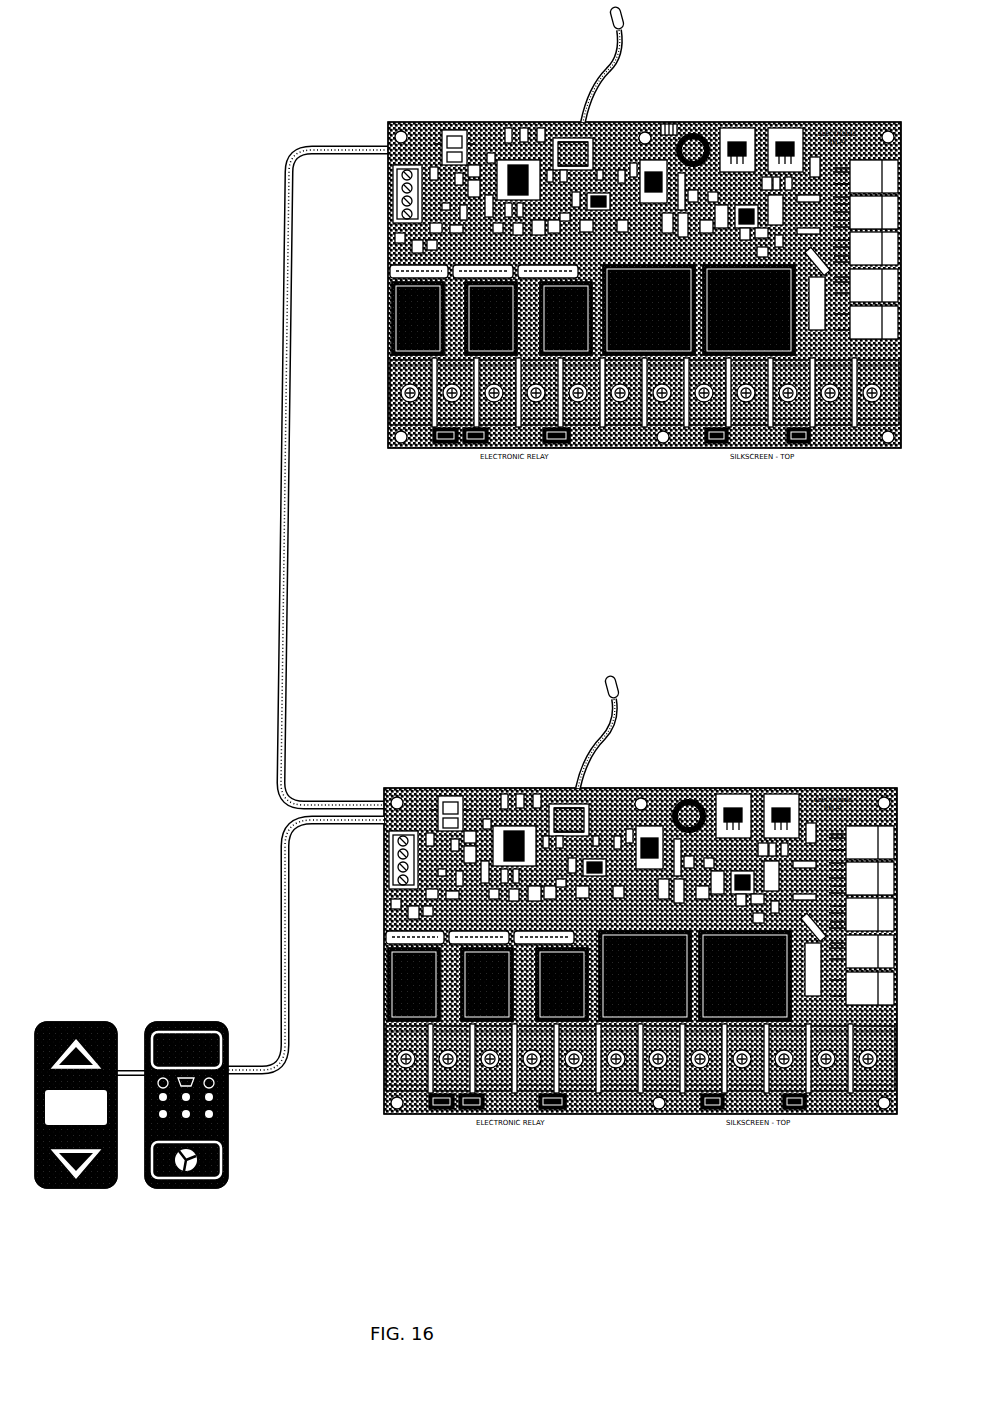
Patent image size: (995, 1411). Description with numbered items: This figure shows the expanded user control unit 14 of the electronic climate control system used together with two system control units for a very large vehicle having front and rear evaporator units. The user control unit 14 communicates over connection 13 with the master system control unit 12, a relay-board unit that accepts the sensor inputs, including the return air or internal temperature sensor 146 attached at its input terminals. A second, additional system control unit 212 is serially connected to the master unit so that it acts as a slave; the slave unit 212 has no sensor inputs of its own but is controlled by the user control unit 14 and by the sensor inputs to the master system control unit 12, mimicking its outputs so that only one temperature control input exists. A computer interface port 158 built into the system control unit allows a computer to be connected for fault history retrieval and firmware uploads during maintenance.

The system control unit 12 is at (803, 114).
The internal temperature sensor 146 is at (624, 44).
The additional system control unit 212 is at (667, 126).
The computer interface port 158 is at (437, 788).
The connection 13 is at (281, 895).
The user control unit 14 is at (108, 989).